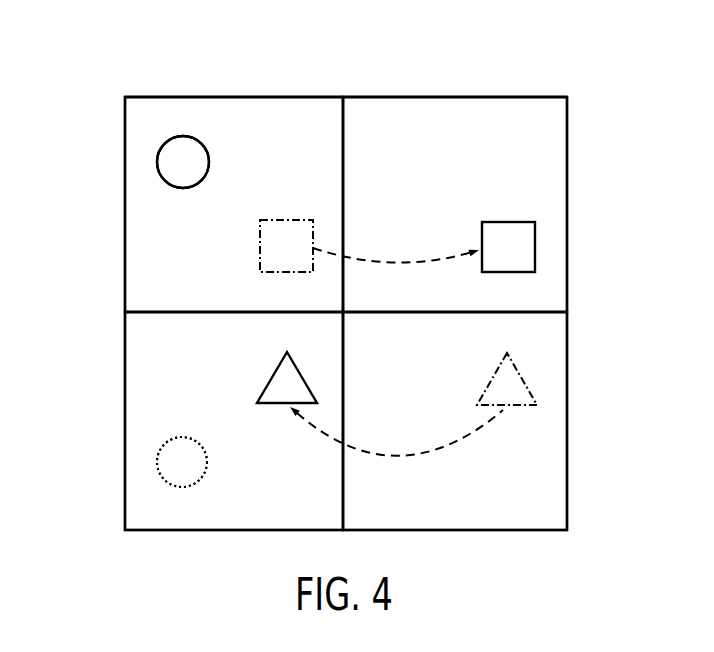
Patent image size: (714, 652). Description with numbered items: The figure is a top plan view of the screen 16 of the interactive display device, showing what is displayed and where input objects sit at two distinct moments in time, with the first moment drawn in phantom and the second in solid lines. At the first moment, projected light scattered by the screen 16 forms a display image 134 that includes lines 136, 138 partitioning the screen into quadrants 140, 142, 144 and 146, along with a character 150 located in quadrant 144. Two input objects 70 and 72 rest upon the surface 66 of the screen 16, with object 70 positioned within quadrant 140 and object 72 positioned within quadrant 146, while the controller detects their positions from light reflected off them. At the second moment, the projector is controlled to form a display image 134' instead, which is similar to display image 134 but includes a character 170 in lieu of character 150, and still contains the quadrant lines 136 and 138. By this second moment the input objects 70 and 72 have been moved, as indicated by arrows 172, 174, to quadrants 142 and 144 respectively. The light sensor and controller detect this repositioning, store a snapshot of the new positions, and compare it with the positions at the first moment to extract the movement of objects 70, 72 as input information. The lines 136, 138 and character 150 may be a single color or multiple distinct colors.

The screen 16 is at (488, 90).
The surface 66 is at (435, 108).
The object 70 is at (260, 250).
The object 72 is at (272, 375).
The display image 134 is at (263, 257).
The display image 134' is at (130, 146).
The line 136 is at (343, 130).
The line 138 is at (153, 312).
The quadrant 140 is at (148, 112).
The quadrant 142 is at (530, 113).
The quadrant 144 is at (175, 512).
The quadrant 146 is at (462, 515).
The character 150 is at (195, 483).
The character 170 is at (210, 163).
The arrow 172 is at (400, 260).
The arrow 174 is at (420, 452).